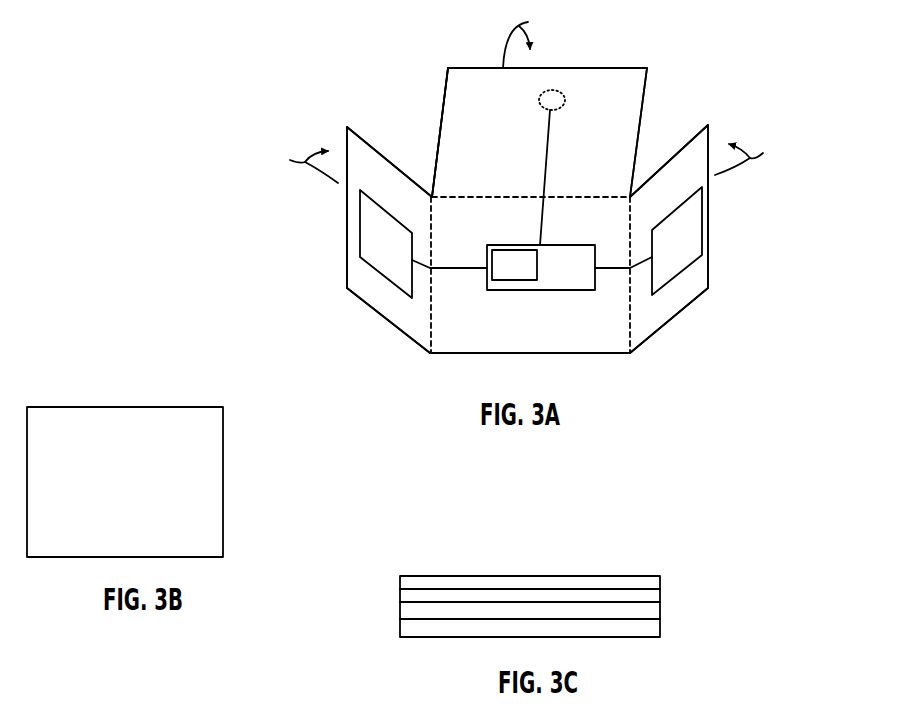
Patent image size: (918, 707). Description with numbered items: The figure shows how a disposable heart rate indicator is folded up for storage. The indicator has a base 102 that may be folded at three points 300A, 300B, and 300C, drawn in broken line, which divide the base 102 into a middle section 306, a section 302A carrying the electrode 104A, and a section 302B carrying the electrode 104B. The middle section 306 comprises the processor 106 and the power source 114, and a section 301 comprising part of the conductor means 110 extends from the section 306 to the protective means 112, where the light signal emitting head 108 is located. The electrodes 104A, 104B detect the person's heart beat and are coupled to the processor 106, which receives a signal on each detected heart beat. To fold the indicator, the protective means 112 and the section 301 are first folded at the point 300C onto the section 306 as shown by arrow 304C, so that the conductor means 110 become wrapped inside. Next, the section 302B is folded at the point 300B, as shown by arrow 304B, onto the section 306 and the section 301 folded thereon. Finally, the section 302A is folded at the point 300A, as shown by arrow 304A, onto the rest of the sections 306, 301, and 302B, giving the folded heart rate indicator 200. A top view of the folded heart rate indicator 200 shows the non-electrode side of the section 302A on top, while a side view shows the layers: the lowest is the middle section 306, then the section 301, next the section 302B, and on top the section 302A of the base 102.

In FIG. 3A, the base 102 is at (530, 335).
In FIG. 3A, the electrode 104A is at (423, 244).
In FIG. 3A, the electrode 104B is at (648, 241).
In FIG. 3A, the processor 106 is at (541, 267).
In FIG. 3A, the light signal emitting head 108 is at (548, 94).
In FIG. 3A, the conductor means 110 is at (548, 146).
In FIG. 3A, the protective means 112 is at (539, 132).
In FIG. 3A, the power source 114 is at (514, 265).
In FIG. 3A, the folded heart rate indicator 200 is at (696, 60).
In FIG. 3A, the folding point 300A is at (433, 216).
In FIG. 3A, the folding point 300B is at (629, 236).
In FIG. 3A, the folding point 300C is at (513, 196).
In FIG. 3A, the section 301 is at (443, 100).
In FIG. 3C, the section 301 is at (660, 607).
In FIG. 3A, the section of the base 302A is at (373, 322).
In FIG. 3B, the section of the base 302A is at (125, 482).
In FIG. 3C, the section of the base 302A is at (661, 582).
In FIG. 3A, the section of the base 302B is at (708, 243).
In FIG. 3C, the section of the base 302B is at (400, 595).
In FIG. 3A, the arrow 304A is at (301, 156).
In FIG. 3A, the arrow 304B is at (757, 152).
In FIG. 3A, the arrow 304C is at (535, 36).
In FIG. 3A, the section of the base 306 is at (619, 352).
In FIG. 3C, the section of the base 306 is at (400, 622).